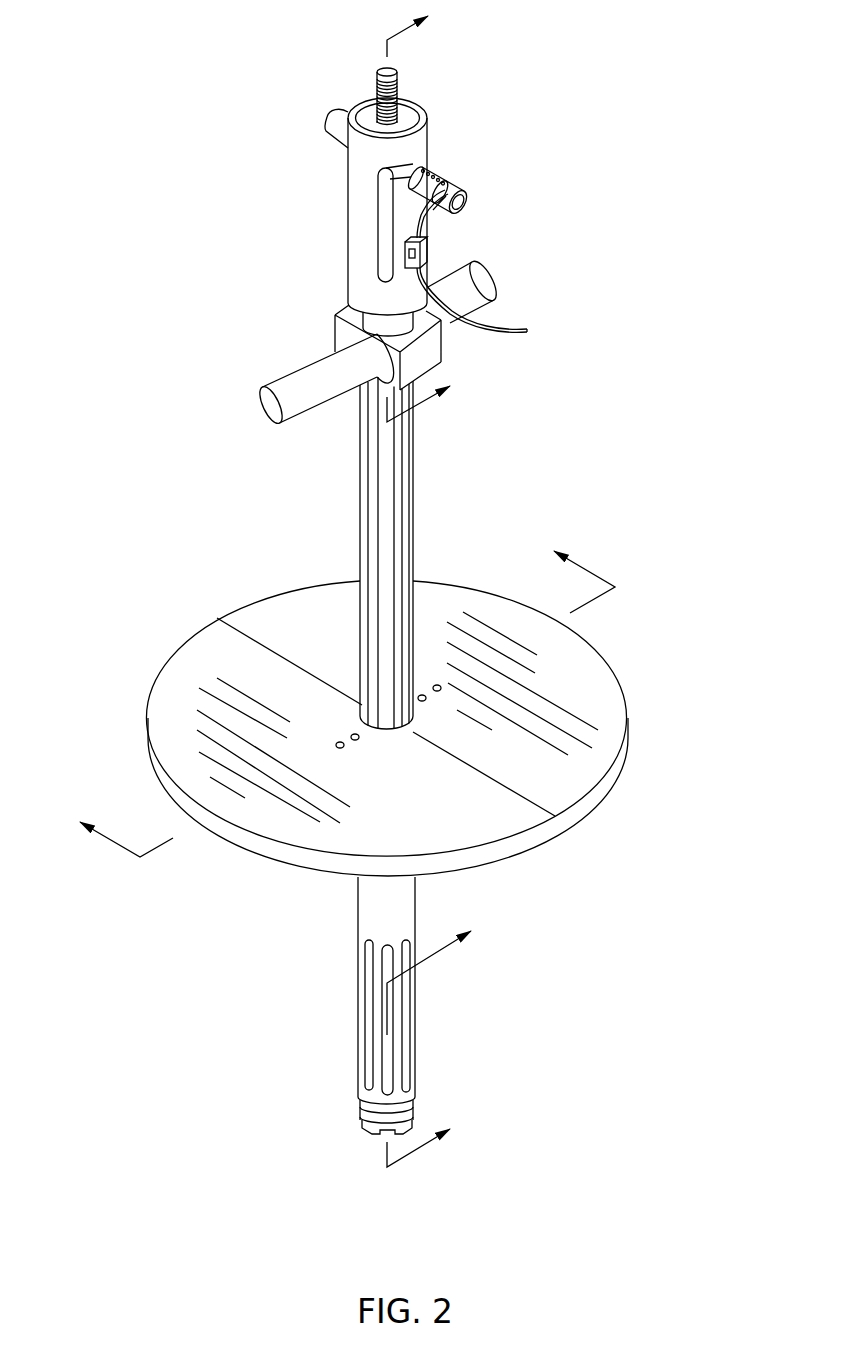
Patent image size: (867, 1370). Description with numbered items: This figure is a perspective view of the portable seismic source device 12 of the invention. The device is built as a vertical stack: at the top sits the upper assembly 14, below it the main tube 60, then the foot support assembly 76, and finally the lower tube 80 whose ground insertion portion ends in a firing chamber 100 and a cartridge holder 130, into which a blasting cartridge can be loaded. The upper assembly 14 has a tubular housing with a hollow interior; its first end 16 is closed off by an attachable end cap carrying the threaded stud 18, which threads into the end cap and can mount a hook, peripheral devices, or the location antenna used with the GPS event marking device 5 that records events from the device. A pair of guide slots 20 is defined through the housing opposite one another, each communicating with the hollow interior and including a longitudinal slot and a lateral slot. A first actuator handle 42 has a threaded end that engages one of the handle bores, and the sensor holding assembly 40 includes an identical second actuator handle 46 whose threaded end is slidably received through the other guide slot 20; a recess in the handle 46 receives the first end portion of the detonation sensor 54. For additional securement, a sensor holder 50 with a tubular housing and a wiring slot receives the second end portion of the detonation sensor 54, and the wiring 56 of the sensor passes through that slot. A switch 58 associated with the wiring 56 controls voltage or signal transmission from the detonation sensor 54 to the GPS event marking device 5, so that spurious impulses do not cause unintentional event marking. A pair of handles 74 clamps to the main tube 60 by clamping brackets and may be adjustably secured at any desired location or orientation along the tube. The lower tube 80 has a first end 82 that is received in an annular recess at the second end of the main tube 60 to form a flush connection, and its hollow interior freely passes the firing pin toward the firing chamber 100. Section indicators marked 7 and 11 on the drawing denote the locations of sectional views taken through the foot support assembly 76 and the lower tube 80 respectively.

The seismic source device 12 is at (160, 118).
The upper assembly 14 is at (348, 203).
The first end 16 is at (407, 118).
The threaded stud 18 is at (377, 72).
The guide slots 20 is at (387, 237).
The sensor holding assembly 40 is at (440, 172).
The first actuator handle 42 is at (327, 118).
The second actuator handle 46 is at (428, 167).
The sensor holder 50 is at (453, 192).
The detonation sensor 54 is at (470, 206).
The wiring 56 is at (432, 207).
The switch 58 is at (433, 253).
The main tube 60 is at (360, 507).
The handles 74 is at (497, 275).
The foot support assembly 76 is at (179, 650).
The lower tube 80 is at (358, 970).
The first end 82 is at (410, 1005).
The firing chamber 100 is at (415, 1100).
The cartridge holder 130 is at (370, 1133).
The GPS event marking device 5 is at (432, 211).
The section line 7- 7 is at (336, 692).
The section line 11- 11 is at (449, 1040).